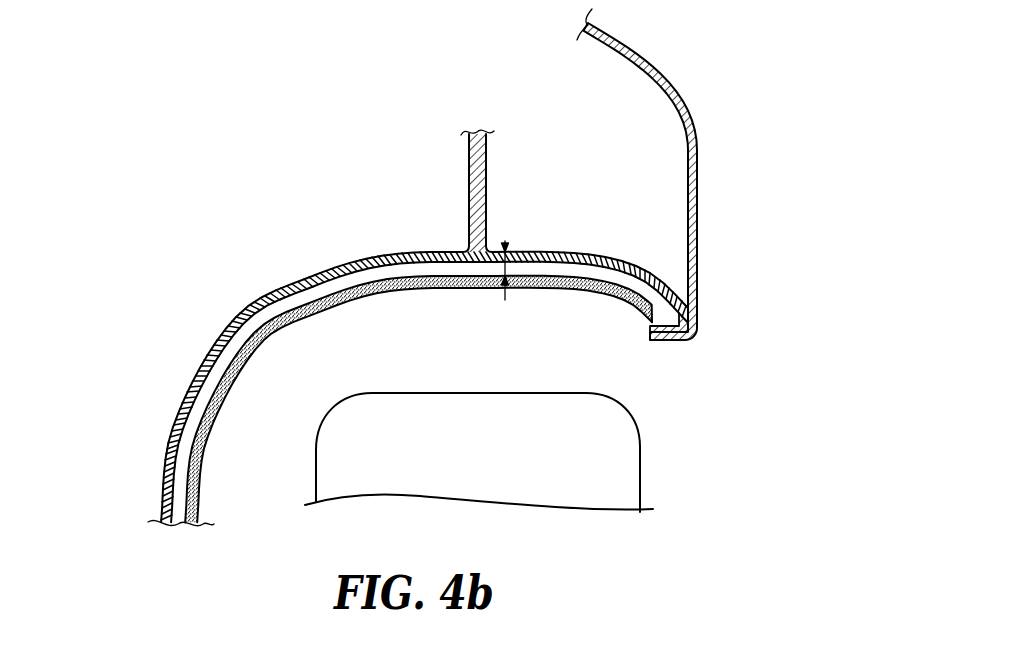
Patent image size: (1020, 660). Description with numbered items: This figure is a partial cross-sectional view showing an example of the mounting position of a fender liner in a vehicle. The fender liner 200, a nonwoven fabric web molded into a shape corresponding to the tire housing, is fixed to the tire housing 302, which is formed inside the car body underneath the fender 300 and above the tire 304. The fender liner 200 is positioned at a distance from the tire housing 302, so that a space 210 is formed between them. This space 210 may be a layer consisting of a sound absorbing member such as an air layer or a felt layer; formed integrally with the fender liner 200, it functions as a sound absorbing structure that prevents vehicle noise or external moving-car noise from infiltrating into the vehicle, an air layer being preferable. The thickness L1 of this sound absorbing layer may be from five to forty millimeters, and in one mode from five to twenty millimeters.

The fender liner 200 is at (325, 311).
The space 210 is at (389, 328).
The fender 300 is at (699, 192).
The tire housing 302 is at (172, 432).
The tire 304 is at (641, 457).
The thickness of the layer consisting of a sound absorbing member L1 is at (512, 268).